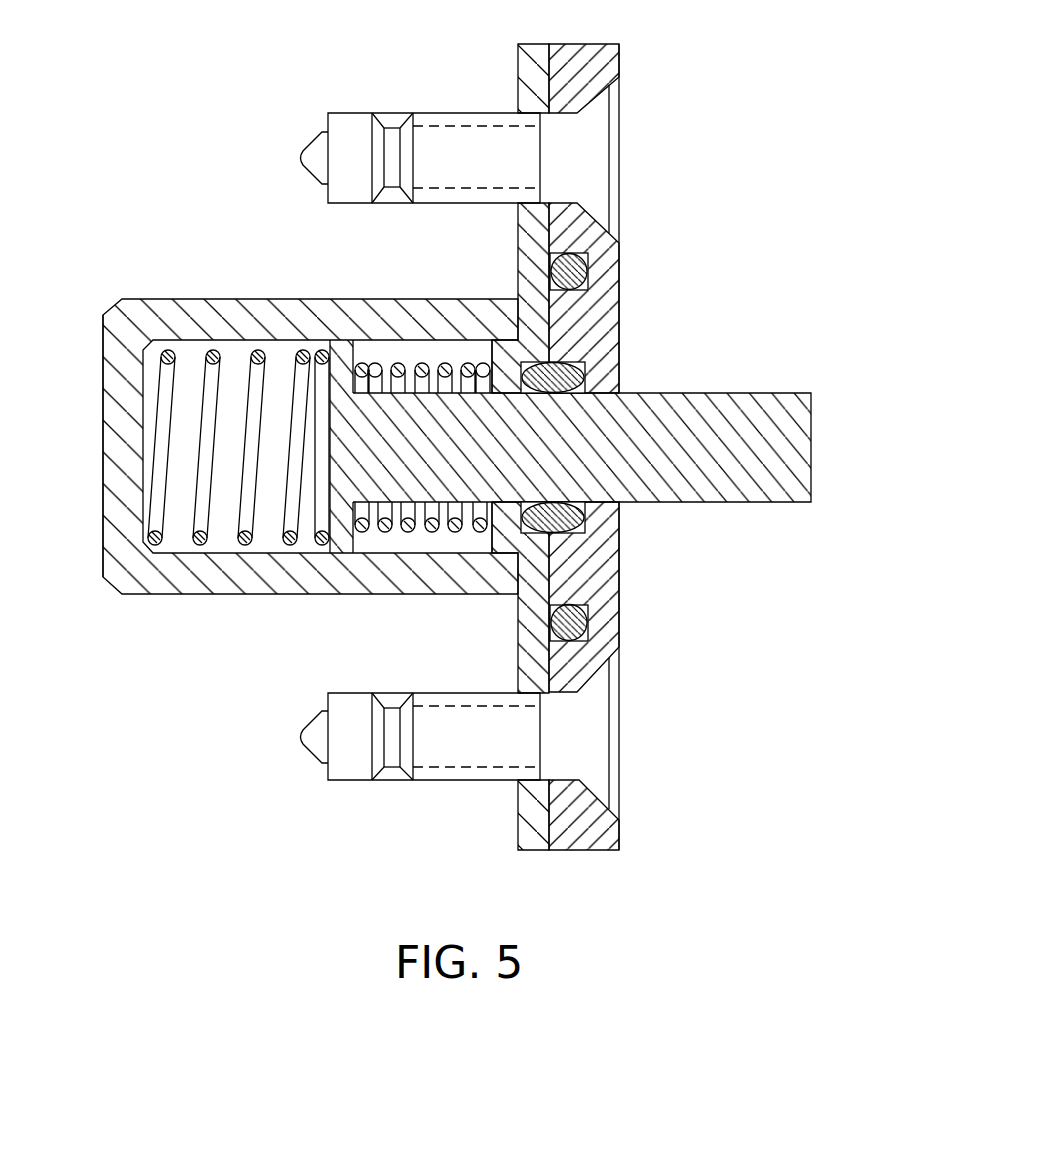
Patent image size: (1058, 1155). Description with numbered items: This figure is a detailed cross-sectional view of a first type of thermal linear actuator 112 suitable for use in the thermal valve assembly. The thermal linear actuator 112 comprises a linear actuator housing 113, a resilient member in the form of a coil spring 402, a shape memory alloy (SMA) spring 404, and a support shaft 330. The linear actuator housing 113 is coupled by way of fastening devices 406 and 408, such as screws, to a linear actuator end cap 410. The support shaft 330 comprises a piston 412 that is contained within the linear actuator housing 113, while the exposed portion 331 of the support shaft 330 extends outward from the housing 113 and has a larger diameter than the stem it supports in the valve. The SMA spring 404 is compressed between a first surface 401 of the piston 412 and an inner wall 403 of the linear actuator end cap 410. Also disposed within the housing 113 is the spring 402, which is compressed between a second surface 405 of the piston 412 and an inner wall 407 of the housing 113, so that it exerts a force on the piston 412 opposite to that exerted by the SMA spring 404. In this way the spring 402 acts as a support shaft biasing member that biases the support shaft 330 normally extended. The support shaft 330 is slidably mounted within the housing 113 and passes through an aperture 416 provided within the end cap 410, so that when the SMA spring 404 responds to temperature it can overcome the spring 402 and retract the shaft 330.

The thermal linear actuator 112 is at (790, 100).
The linear actuator housing 113 is at (102, 550).
The support shaft 330 is at (836, 445).
The exposed portion of support shaft 331 is at (780, 393).
The first surface of piston 401 is at (357, 543).
The resilient member (coil spring) 402 is at (213, 350).
The inner wall of linear actuator end cap 403 is at (477, 350).
The shape memory alloy (SMA) spring 404 is at (398, 362).
The second surface of piston 405 is at (318, 540).
The fastening device (screw) 406 is at (603, 162).
The inner wall of housing 407 is at (143, 414).
The fastening device (screw) 408 is at (595, 739).
The linear actuator end cap 410 is at (603, 622).
The piston 412 is at (342, 543).
The aperture 416 is at (622, 393).